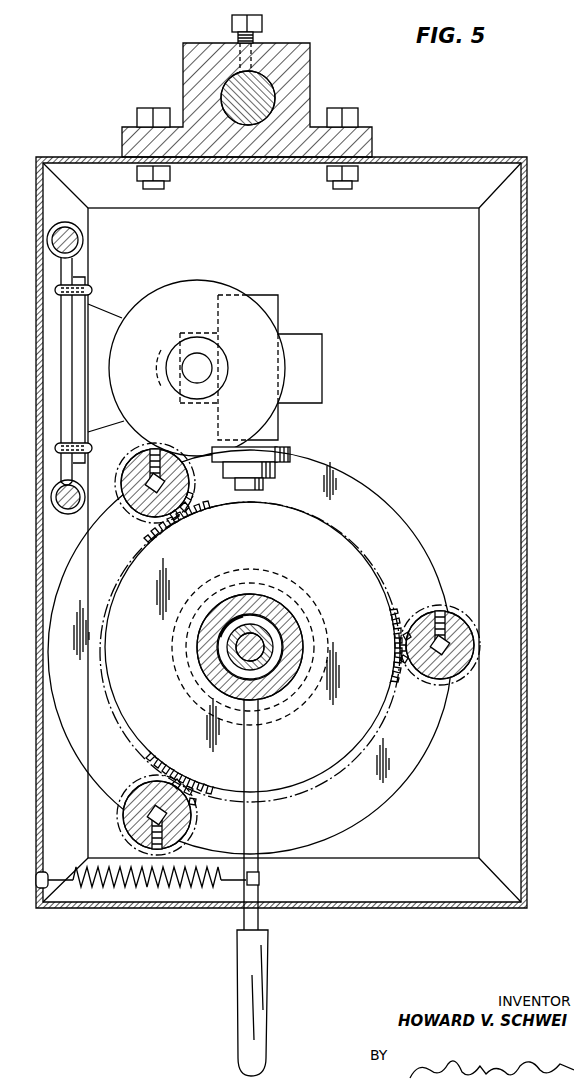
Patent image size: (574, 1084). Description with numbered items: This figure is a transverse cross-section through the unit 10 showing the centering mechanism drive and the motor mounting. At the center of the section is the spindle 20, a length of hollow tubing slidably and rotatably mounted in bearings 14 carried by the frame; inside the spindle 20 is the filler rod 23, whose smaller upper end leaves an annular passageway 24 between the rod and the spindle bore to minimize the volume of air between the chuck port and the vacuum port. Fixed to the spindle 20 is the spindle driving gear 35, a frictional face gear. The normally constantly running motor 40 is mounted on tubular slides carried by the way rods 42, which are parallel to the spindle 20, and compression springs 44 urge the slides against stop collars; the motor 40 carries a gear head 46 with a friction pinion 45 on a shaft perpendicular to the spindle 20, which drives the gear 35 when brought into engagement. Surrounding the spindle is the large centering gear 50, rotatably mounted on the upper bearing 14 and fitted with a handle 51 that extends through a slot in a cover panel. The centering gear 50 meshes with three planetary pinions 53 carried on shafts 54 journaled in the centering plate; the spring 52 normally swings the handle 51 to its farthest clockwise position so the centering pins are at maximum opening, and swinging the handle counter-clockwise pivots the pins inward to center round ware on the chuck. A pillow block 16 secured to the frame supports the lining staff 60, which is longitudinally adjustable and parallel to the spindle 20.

The unit 10 is at (530, 236).
The bearings 14 is at (266, 642).
The pillow block 16 is at (183, 58).
The spindle 20 is at (218, 650).
The filler rod 23 is at (290, 645).
The passageway 24 is at (266, 628).
The spindle driving gear 35 is at (395, 510).
The motor 40 is at (238, 279).
The way rods 42 is at (70, 242).
The compression springs 44 is at (82, 236).
The friction pinion 45 is at (291, 453).
The gear head 46 is at (283, 308).
The centering gear 50 is at (364, 560).
The handle 51 is at (266, 958).
The spring 52 is at (106, 866).
The planetary pinions 53 is at (130, 520).
The shafts 54 is at (150, 475).
The lining staff 60 is at (266, 90).